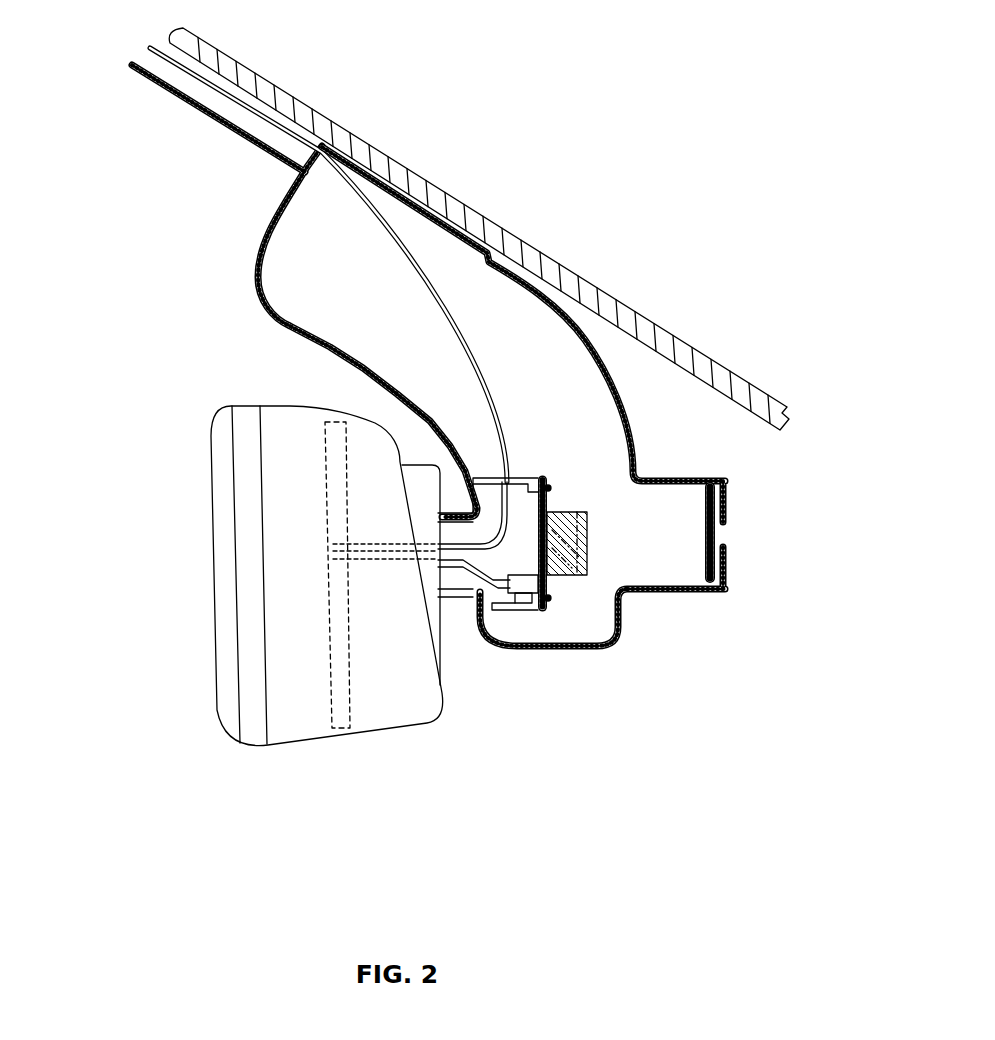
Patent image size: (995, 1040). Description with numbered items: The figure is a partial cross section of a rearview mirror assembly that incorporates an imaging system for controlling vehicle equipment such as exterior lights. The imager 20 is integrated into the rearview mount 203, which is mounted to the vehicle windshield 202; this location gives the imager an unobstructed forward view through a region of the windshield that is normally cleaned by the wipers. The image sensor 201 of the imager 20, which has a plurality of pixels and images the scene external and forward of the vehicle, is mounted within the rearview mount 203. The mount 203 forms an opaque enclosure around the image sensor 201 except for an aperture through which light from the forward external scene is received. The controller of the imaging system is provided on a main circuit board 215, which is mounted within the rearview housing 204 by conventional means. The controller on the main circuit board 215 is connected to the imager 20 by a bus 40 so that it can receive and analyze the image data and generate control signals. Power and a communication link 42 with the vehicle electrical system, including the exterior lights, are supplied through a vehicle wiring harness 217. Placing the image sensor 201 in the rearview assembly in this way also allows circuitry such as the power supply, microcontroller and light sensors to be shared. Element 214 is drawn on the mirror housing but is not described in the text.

The windshield 202 is at (520, 206).
The rearview mount 203 is at (290, 255).
The vehicle wiring harness 217 is at (463, 332).
The communication link 42 is at (483, 393).
The imager 20 is at (575, 594).
The image sensor 201 is at (538, 538).
The bus 40 is at (475, 580).
The rearview housing 204 is at (213, 640).
The mirror element 214 is at (271, 767).
The main circuit board 215 is at (350, 695).